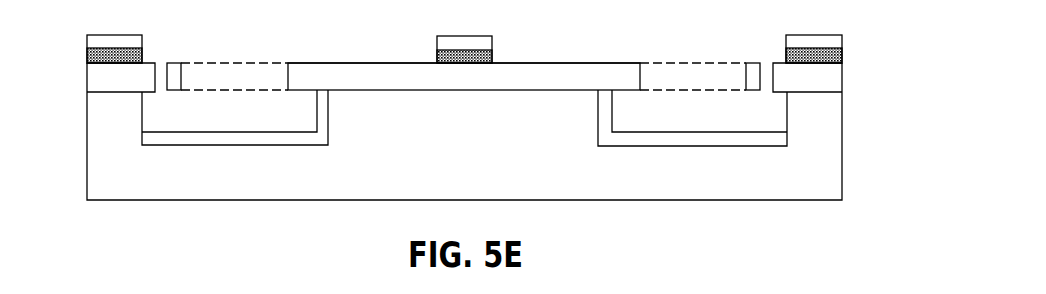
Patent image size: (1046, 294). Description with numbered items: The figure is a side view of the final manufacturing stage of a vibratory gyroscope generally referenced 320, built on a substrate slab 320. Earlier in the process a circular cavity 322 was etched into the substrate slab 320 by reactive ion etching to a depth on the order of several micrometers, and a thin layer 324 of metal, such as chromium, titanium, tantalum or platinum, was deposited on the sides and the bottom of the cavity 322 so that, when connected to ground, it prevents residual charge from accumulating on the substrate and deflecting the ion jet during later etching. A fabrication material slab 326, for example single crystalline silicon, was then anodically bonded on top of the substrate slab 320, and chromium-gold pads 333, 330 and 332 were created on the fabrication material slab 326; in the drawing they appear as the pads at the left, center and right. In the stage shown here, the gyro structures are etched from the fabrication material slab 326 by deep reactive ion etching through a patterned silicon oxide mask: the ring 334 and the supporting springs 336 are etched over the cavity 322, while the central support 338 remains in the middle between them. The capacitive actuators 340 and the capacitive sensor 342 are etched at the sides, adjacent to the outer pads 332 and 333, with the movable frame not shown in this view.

The substrate slab 320 is at (733, 200).
The circular cavity 322 is at (207, 122).
The layer of metal 324 is at (317, 100).
The fabrication material slab 326 is at (323, 63).
The chromium-gold pad 330 is at (448, 35).
The chromium-gold pad 332 is at (832, 35).
The chromium-gold pad 333 is at (97, 35).
The ring 334 is at (173, 63).
The supporting springs 336 is at (710, 63).
The central support 338 is at (590, 63).
The capacitive actuators 340 is at (843, 80).
The capacitive sensor 342 is at (85, 73).